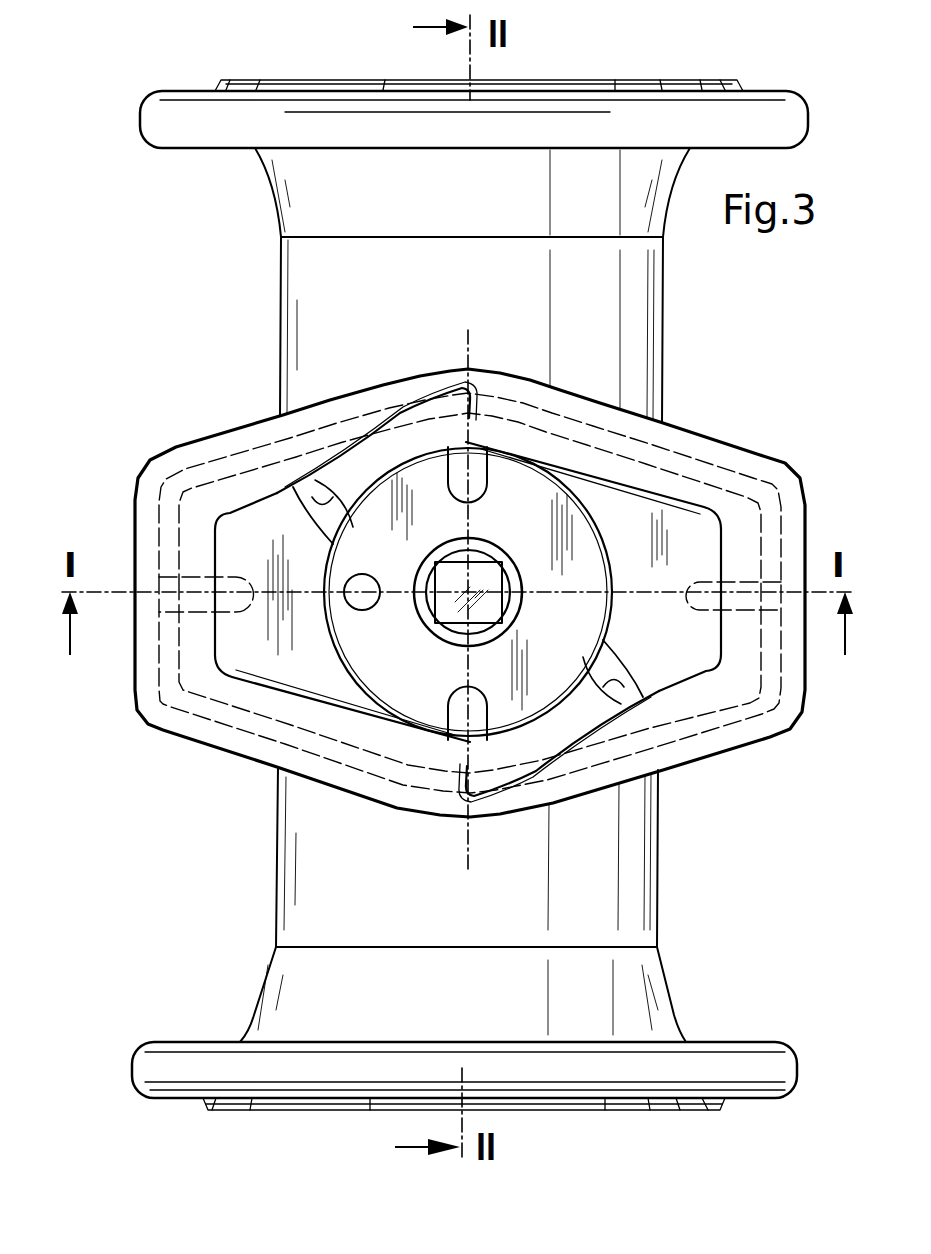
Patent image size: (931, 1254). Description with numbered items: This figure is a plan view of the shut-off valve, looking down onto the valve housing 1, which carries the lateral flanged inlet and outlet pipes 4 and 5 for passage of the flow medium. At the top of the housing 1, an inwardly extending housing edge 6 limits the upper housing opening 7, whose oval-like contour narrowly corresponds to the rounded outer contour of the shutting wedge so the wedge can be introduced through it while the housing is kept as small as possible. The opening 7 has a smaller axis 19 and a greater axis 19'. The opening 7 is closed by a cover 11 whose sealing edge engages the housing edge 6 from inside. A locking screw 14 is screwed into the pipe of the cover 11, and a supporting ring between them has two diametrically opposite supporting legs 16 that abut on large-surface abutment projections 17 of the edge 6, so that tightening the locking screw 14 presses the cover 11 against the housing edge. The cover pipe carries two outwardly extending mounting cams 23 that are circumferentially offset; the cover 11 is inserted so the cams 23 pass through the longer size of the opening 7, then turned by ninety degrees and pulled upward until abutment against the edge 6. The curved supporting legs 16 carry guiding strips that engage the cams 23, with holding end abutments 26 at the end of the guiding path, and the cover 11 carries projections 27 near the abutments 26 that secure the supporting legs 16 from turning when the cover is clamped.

The valve housing 1 is at (713, 438).
The inlet pipe 4 is at (645, 315).
The outlet pipe 5 is at (635, 913).
The housing edge 6 is at (203, 690).
The housing opening 7 is at (253, 687).
The cover 11 is at (150, 495).
The locking screw 14 is at (593, 607).
The supporting legs 16 is at (408, 423).
The abutment projections 17 is at (487, 422).
The smaller axis 19 is at (548, 647).
The greater axis 19' is at (690, 610).
The mounting cams 23 is at (358, 480).
The holding end abutments 26 is at (307, 480).
The projections 27 is at (290, 493).